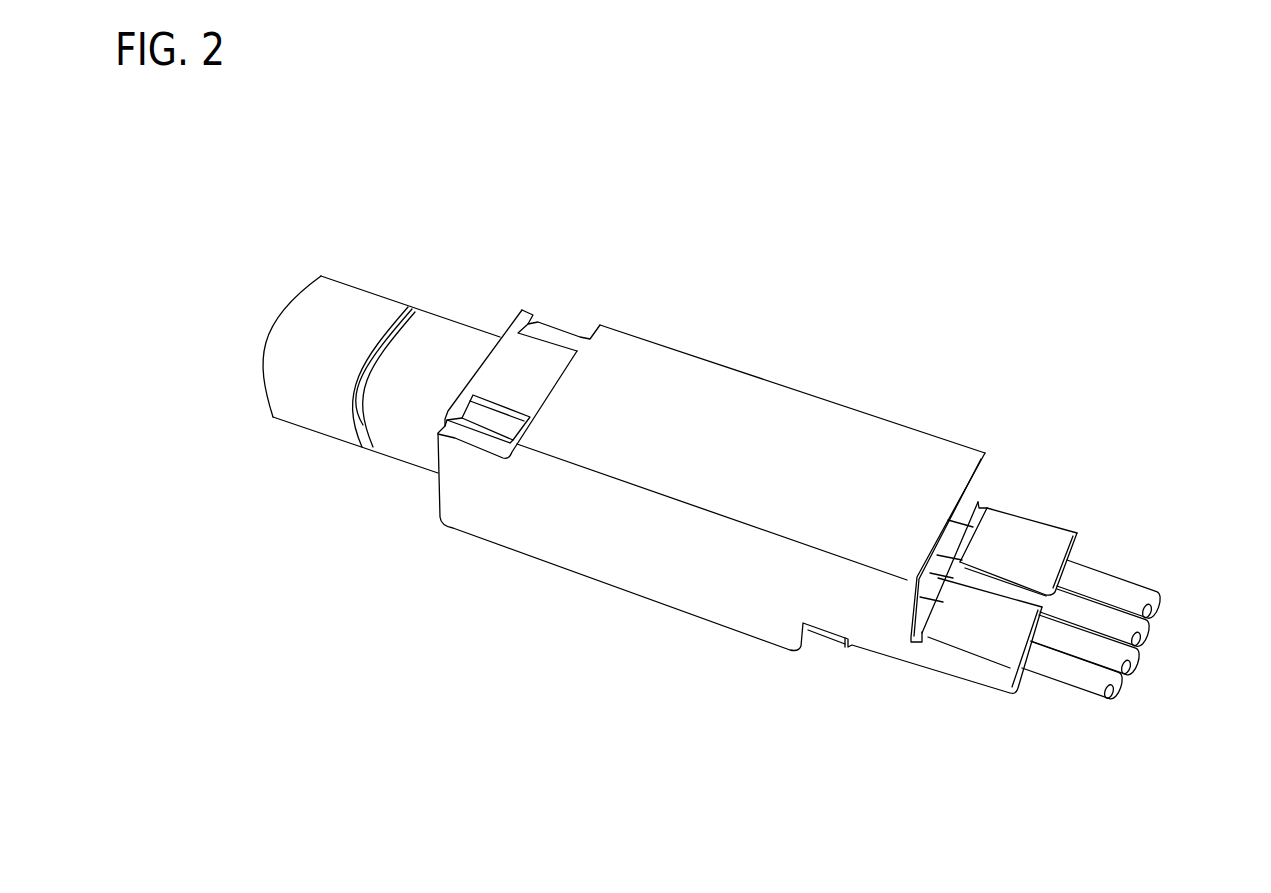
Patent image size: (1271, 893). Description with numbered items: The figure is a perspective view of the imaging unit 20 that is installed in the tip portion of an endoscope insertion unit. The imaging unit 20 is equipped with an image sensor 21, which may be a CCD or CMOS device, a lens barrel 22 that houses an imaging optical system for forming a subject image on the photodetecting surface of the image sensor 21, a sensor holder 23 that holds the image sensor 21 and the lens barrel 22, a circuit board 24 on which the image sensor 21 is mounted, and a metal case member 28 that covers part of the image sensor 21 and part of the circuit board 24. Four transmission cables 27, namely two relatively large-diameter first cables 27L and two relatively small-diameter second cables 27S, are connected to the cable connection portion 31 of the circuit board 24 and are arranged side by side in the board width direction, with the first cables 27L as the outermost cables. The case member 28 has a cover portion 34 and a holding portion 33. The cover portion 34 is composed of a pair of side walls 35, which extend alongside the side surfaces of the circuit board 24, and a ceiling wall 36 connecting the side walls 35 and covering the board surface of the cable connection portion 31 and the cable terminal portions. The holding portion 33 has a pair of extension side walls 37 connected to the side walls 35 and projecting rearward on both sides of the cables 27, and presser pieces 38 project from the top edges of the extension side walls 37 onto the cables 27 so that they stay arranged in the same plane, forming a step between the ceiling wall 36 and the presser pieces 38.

The imaging unit 20 is at (913, 258).
The image sensor 21 is at (548, 337).
The lens barrel 22 is at (370, 288).
The sensor holder 23 is at (457, 320).
The circuit board 24 is at (740, 494).
The cables 27 is at (1125, 652).
The second cables 27S is at (1095, 612).
The first cables 27L is at (1142, 595).
The case member 28 is at (1128, 423).
The cable connection portion 31 is at (825, 633).
The holding portion 33 is at (1009, 578).
The cover portion 34 is at (937, 432).
The side walls 35 is at (632, 578).
The ceiling wall 36 is at (742, 378).
The extension side walls 37 is at (1080, 546).
The presser pieces 38 is at (1022, 518).